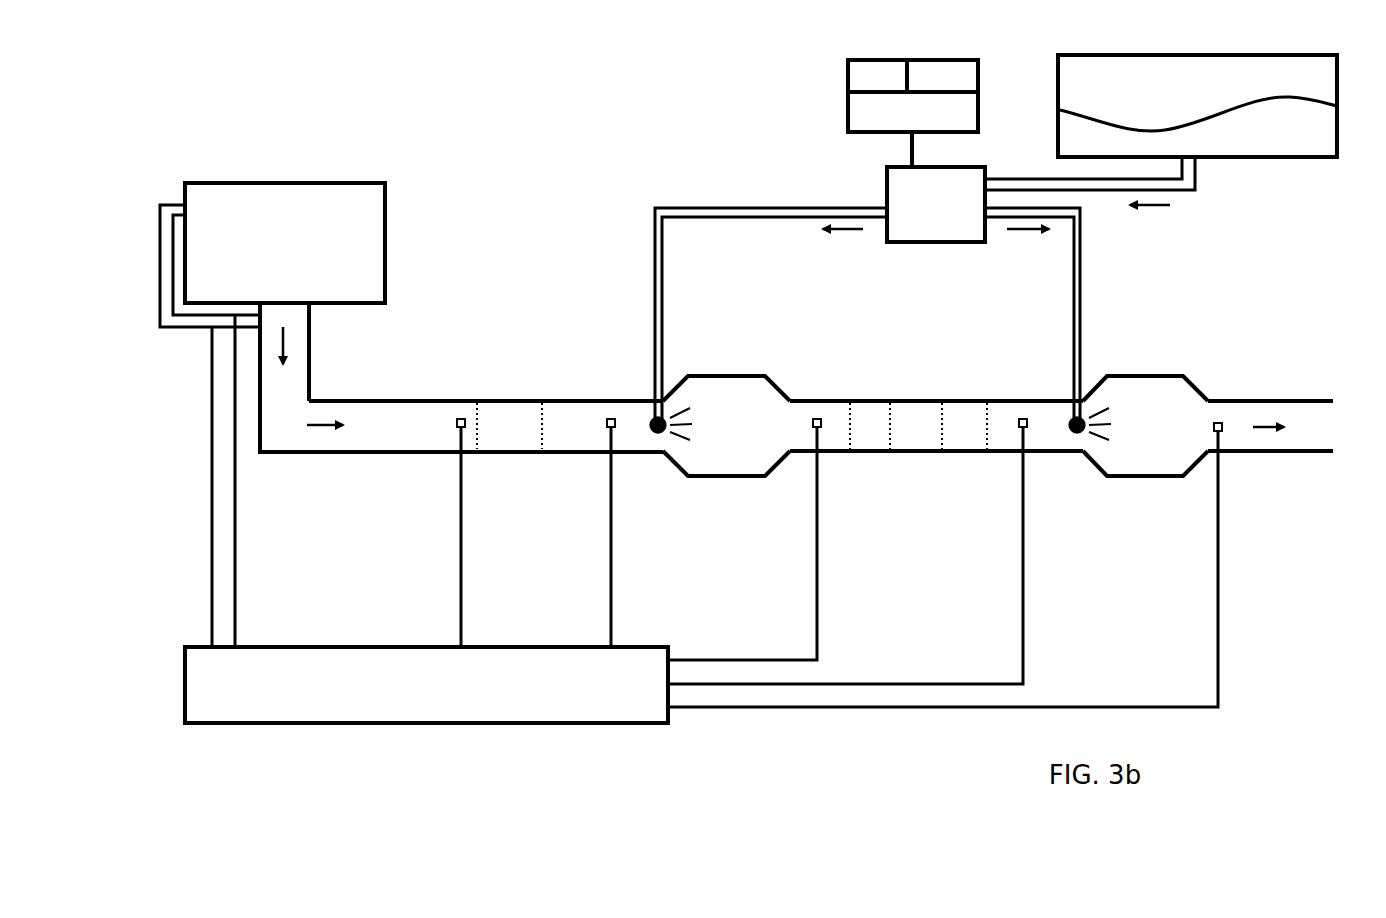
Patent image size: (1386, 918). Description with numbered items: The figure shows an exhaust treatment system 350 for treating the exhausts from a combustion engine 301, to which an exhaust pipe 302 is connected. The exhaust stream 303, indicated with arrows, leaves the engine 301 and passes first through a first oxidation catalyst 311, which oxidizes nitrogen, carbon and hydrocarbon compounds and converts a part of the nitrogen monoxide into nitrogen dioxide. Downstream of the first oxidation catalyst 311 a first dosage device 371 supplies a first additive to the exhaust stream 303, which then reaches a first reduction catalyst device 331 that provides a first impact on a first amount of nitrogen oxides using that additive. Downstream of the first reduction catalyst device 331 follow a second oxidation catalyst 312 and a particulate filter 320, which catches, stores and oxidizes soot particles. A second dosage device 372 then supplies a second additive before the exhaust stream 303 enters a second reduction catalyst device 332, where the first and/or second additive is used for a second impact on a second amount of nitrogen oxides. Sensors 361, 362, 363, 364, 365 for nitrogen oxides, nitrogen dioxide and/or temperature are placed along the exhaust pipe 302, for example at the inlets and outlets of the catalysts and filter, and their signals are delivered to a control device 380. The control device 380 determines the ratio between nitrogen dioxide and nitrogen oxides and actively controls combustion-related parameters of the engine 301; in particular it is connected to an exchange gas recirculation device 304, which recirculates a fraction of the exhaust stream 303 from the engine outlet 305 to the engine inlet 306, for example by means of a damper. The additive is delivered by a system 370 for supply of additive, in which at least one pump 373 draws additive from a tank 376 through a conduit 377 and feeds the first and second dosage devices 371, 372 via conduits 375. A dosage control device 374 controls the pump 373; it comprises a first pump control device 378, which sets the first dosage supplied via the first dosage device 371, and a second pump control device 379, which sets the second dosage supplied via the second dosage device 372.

The combustion engine 301 is at (285, 243).
The exhaust pipe 302 is at (427, 401).
The exhaust stream 303 is at (322, 452).
The exchange gas recirculation device 304 is at (177, 329).
The engine outlet 305 is at (300, 314).
The engine inlet 306 is at (184, 206).
The first oxidation catalyst 311 is at (513, 430).
The second oxidation catalyst 312 is at (866, 430).
The particulate filter 320 is at (963, 430).
The first reduction catalyst device 331 is at (713, 455).
The second reduction catalyst device 332 is at (1146, 455).
The exhaust treatment system 350 is at (1267, 563).
The sensor 361 is at (611, 419).
The sensor 362 is at (817, 419).
The sensor 363 is at (1023, 419).
The sensor 364 is at (1218, 422).
The sensor 365 is at (462, 418).
The system for supply of additive 370 is at (778, 111).
The first dosage device 371 is at (656, 433).
The second dosage device 372 is at (1077, 433).
The pump 373 is at (936, 204).
The dosage control device 374 is at (913, 113).
The conduits for additive 375 is at (843, 238).
The tank for additive 376 is at (1197, 106).
The conduit 377 is at (1201, 183).
The first pump control device 378 is at (881, 76).
The second pump control device 379 is at (937, 77).
The control device 380 is at (426, 685).